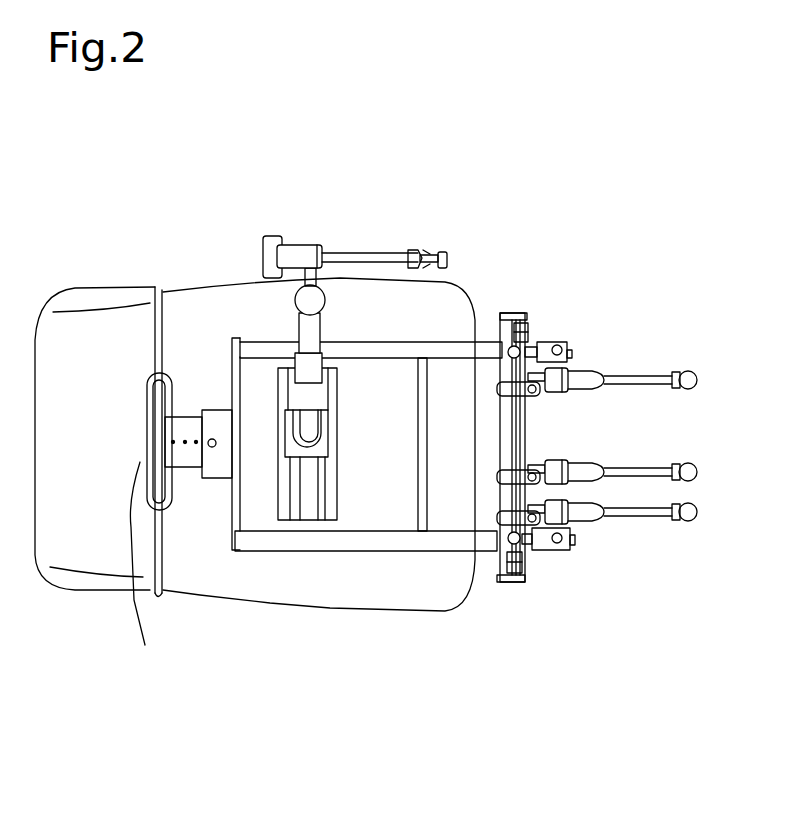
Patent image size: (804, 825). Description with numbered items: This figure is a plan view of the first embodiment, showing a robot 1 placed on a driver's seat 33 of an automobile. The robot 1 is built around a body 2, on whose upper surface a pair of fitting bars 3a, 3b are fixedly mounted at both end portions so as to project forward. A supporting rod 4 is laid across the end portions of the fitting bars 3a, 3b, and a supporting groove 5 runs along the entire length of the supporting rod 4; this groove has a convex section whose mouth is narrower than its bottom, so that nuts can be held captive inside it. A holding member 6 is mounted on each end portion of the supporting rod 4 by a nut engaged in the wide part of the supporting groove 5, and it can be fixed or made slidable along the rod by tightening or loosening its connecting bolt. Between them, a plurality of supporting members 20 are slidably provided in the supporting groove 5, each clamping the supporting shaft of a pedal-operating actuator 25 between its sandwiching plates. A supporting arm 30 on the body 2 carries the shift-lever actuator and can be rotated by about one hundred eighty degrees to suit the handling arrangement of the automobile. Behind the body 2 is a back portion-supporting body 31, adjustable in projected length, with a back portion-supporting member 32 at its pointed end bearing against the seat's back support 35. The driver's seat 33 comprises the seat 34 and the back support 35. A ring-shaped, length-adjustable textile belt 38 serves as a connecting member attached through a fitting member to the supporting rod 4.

The robot 1 is at (230, 333).
The body 2 is at (262, 518).
The fitting bar 3a is at (363, 540).
The fitting bar 3b is at (440, 345).
The supporting rod 4 is at (500, 316).
The supporting groove 5 is at (517, 445).
The holding member 6 is at (568, 334).
The supporting member 20 is at (540, 397).
The actuator 25 is at (637, 372).
The supporting arm 30 is at (315, 326).
The back portion-supporting body 31 is at (187, 457).
The back portion-supporting member 32 is at (148, 530).
The driver's seat 33 is at (102, 280).
The seat 34 is at (428, 593).
The back support 35 is at (83, 556).
The belt 38 is at (528, 336).